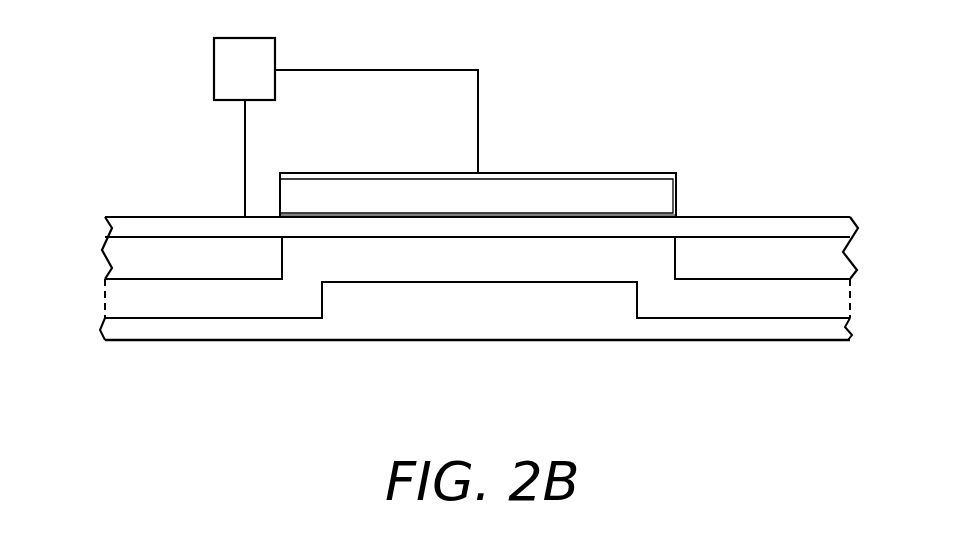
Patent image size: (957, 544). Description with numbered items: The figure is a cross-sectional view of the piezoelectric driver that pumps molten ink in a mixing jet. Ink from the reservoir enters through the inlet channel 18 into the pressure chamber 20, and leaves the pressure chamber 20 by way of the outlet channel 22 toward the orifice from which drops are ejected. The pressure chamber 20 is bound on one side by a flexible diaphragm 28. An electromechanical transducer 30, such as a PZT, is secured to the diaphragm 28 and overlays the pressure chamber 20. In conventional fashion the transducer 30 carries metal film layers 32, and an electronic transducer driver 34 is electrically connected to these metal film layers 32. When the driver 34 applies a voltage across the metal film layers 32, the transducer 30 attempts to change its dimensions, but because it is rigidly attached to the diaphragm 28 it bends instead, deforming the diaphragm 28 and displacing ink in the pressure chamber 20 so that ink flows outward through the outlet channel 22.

The inlet channel 18 is at (115, 305).
The pressure chamber 20 is at (508, 253).
The outlet channel 22 is at (840, 303).
The flexible diaphragm 28 is at (733, 225).
The electromechanical transducer 30 is at (663, 197).
The metal film layers 32 is at (513, 217).
The electronic transducer driver 34 is at (346, 127).